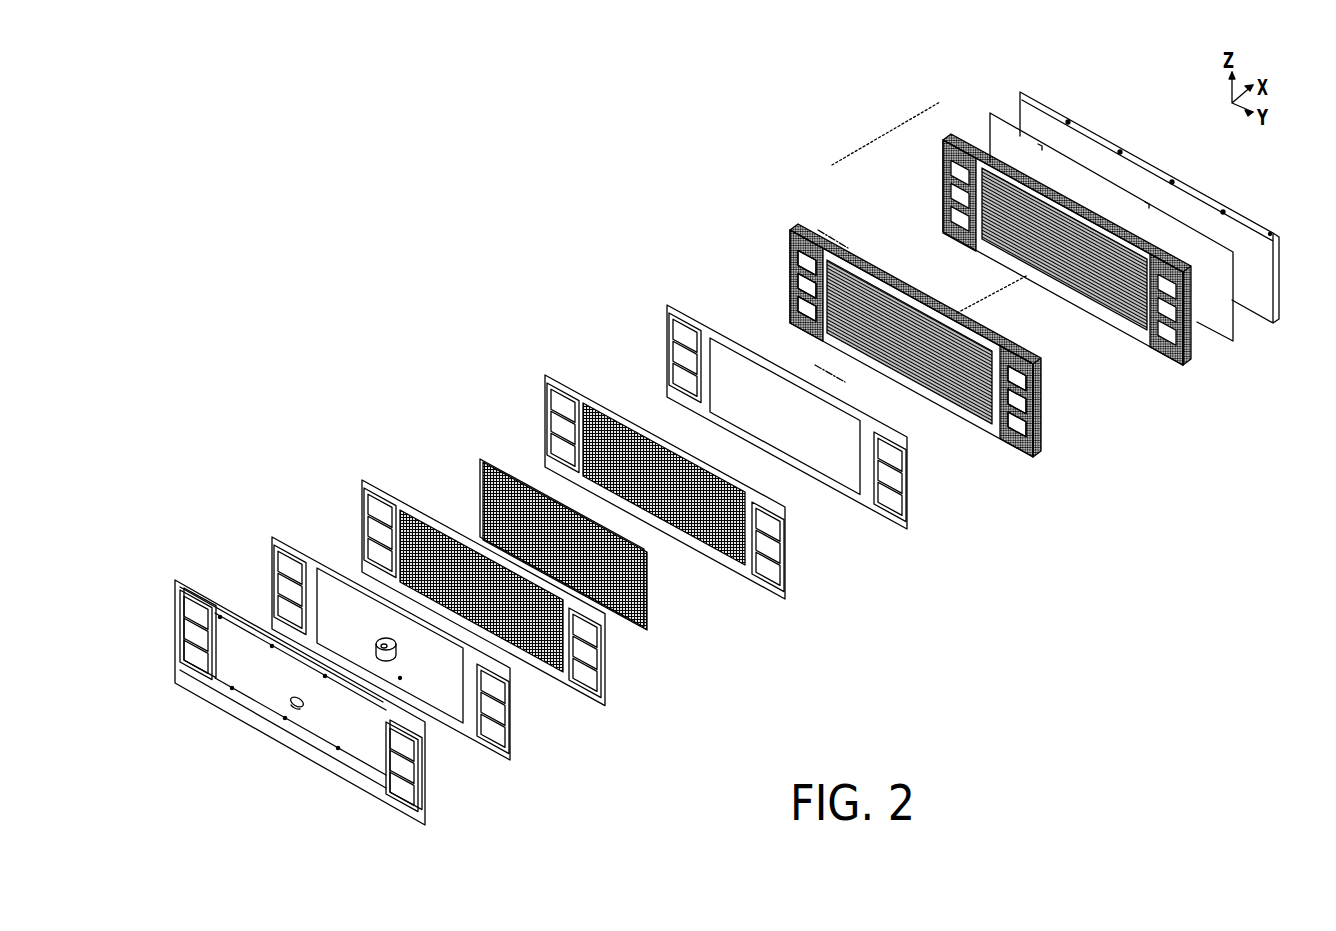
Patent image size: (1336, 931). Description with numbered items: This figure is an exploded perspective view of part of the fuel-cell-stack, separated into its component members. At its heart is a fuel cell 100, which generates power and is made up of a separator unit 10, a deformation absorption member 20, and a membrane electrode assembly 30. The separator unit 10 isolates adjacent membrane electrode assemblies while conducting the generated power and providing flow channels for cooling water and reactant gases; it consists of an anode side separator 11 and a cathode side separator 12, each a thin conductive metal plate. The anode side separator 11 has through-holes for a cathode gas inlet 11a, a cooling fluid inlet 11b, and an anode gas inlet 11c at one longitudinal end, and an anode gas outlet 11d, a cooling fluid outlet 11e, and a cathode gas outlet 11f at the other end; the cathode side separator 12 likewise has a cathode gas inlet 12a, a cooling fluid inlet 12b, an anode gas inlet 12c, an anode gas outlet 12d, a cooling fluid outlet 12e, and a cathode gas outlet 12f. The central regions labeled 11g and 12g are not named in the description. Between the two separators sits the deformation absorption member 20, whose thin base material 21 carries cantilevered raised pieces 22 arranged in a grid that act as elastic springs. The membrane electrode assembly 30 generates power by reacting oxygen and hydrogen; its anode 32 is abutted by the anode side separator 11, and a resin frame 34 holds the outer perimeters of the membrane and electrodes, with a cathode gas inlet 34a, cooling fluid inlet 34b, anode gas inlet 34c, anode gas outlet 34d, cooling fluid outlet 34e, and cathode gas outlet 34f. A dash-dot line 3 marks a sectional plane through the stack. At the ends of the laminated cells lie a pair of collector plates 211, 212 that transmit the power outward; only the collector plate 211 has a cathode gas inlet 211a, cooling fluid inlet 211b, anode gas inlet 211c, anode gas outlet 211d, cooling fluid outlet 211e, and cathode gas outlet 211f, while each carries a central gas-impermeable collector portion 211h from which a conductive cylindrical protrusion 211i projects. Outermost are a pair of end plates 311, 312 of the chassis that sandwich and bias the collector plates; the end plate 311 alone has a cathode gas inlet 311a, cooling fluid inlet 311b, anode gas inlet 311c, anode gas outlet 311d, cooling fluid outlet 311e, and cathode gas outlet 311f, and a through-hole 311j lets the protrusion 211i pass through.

The fuel cell 100 is at (793, 224).
The separator unit 10 is at (362, 479).
The anode side separator 11 is at (665, 505).
The cathode gas inlet 11a is at (551, 398).
The cooling fluid inlet 11b is at (551, 420).
The anode gas inlet 11c is at (551, 442).
The anode gas outlet 11d is at (784, 528).
The cooling fluid outlet 11e is at (784, 550).
The cathode gas outlet 11f is at (784, 572).
The mesh portion 11g is at (594, 416).
The cathode side separator 12 is at (696, 486).
The cathode gas inlet 12a is at (798, 258).
The cooling fluid inlet 12b is at (798, 281).
The anode gas inlet 12c is at (798, 304).
The anode gas outlet 12d is at (1027, 384).
The cooling fluid outlet 12e is at (1027, 407).
The cathode gas outlet 12f is at (1027, 430).
The mesh portion 12g is at (410, 522).
The deformation absorption member 20 is at (578, 520).
The base material 21 is at (647, 560).
The raised pieces 22 is at (647, 602).
The membrane electrode assembly 30 is at (666, 304).
The anode 32 is at (828, 458).
The frame 34 is at (786, 421).
The cathode gas inlet 34a is at (672, 326).
The cooling fluid inlet 34b is at (672, 348).
The anode gas inlet 34c is at (672, 370).
The anode gas outlet 34d is at (906, 458).
The cooling fluid outlet 34e is at (906, 480).
The cathode gas outlet 34f is at (906, 502).
The collector plate 211 is at (393, 649).
The cathode gas inlet 211a is at (277, 558).
The cooling fluid inlet 211b is at (277, 580).
The anode gas inlet 211c is at (277, 602).
The anode gas outlet 211d is at (509, 688).
The cooling fluid outlet 211e is at (509, 710).
The cathode gas outlet 211f is at (509, 735).
The collector portion 211h is at (378, 662).
The protrusion 211i is at (400, 678).
The collector plate 212 is at (990, 113).
The end plate 311 is at (300, 689).
The cathode gas inlet 311a is at (184, 606).
The cooling fluid inlet 311b is at (184, 628).
The anode gas inlet 311c is at (184, 650).
The anode gas outlet 311d is at (420, 760).
The cooling fluid outlet 311e is at (420, 782).
The cathode gas outlet 311f is at (420, 804).
The through-hole 311j is at (290, 704).
The end plate 312 is at (1025, 92).
The section line 3 is at (832, 377).